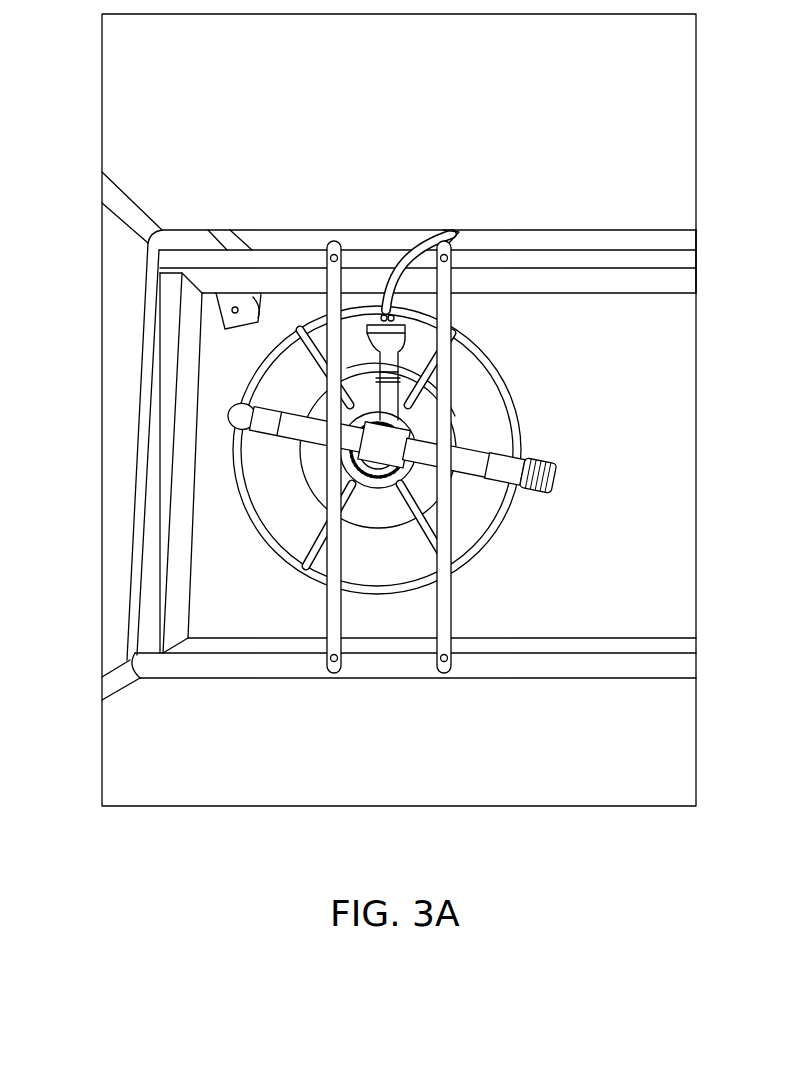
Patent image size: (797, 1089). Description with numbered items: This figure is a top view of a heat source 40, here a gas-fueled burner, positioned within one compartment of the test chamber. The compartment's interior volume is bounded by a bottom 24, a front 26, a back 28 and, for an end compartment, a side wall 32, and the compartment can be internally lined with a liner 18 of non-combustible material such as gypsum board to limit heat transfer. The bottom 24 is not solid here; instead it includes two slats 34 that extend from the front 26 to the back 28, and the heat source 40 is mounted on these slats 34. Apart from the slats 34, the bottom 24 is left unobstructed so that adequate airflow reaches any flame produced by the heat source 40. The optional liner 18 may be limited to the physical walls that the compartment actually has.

The liner 18 is at (677, 180).
The bottom 24 is at (634, 340).
The front 26 is at (545, 756).
The back 28 is at (512, 180).
The side wall 32 is at (128, 413).
The slats 34 is at (327, 625).
The heat source 40 is at (556, 415).